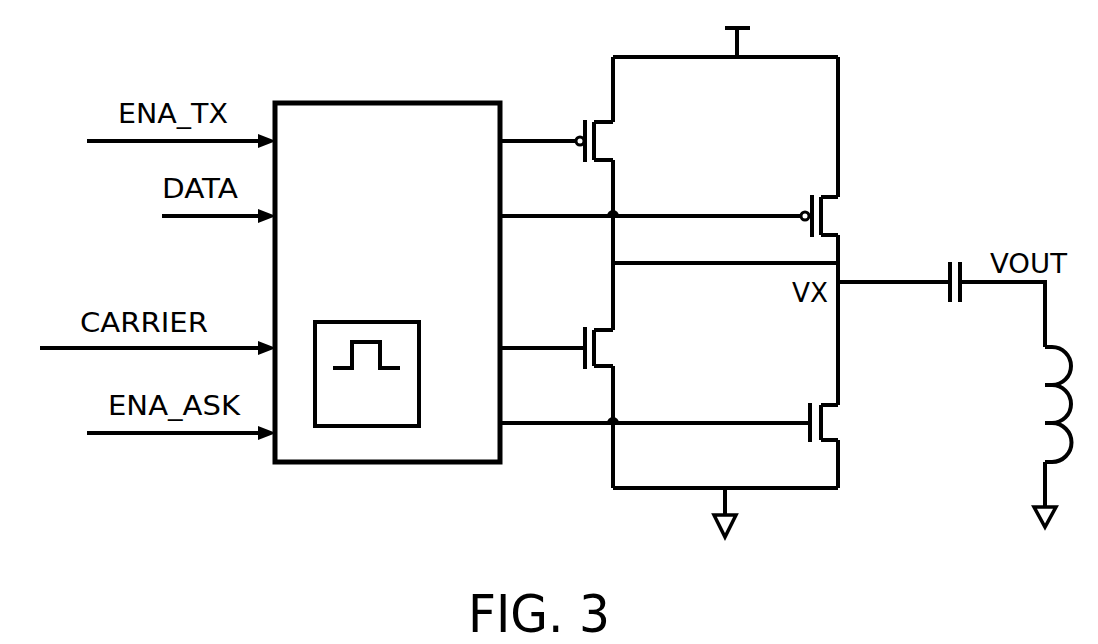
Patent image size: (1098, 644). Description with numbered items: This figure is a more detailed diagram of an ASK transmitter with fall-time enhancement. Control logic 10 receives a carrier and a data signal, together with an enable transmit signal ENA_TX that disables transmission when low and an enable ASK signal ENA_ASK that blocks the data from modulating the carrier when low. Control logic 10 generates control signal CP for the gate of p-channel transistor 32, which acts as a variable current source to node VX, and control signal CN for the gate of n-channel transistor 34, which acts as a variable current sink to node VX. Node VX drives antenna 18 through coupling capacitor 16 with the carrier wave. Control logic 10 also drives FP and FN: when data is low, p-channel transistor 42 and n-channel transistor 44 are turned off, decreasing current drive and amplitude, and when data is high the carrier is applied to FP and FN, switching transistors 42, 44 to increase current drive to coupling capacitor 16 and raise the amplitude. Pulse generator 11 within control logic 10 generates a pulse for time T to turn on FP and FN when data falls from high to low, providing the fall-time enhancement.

The control logic 10 is at (428, 238).
The pulse generator 11 is at (373, 408).
The p-channel transistor 32 is at (598, 132).
The n-channel transistor 34 is at (598, 340).
The p-channel transistor 42 is at (826, 206).
The n-channel transistor 44 is at (826, 412).
The coupling capacitor 16 is at (949, 295).
The antenna 18 is at (1045, 386).